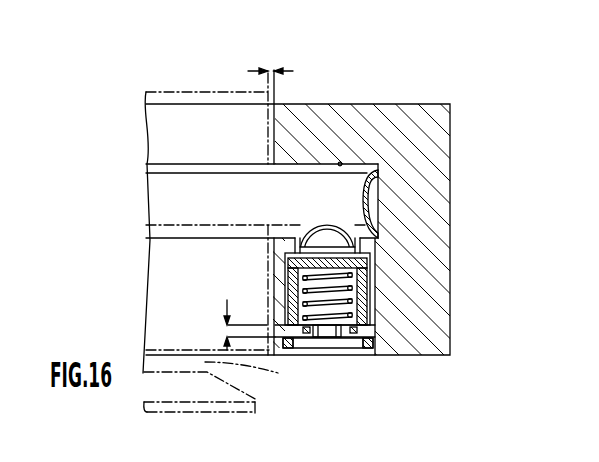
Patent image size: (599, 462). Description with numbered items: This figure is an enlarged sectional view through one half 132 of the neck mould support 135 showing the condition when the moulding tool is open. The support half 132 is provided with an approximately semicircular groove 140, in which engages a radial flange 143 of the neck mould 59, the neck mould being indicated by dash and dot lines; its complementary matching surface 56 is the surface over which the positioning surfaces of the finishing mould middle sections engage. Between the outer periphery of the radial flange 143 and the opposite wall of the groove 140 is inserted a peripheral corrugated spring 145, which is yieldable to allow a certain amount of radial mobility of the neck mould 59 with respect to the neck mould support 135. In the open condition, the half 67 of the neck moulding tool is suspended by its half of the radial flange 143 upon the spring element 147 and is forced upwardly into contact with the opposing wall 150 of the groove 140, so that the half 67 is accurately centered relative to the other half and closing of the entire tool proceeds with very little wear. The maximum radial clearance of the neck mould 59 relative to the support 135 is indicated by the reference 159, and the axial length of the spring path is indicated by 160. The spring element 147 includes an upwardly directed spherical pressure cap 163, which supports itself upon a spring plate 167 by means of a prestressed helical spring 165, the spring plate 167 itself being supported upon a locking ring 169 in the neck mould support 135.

The matching surface 56 is at (268, 401).
The neck mould 59 is at (158, 92).
The half of the neck moulding tool 67 is at (252, 373).
The half of the neck mould support 132 is at (437, 104).
The neck mould support 135 is at (418, 88).
The groove 140 is at (298, 164).
The radial flange 143 is at (357, 182).
The peripheral corrugated spring 145 is at (372, 190).
The spring element 147 is at (322, 219).
The opposing wall of the groove 150 is at (340, 163).
The maximum radial clearance 159 is at (271, 74).
The axial length of the spring path 160 is at (226, 331).
The spherical pressure cap 163 is at (288, 261).
The prestressed helical spring 165 is at (299, 290).
The spring plate 167 is at (345, 329).
The locking ring 169 is at (367, 342).